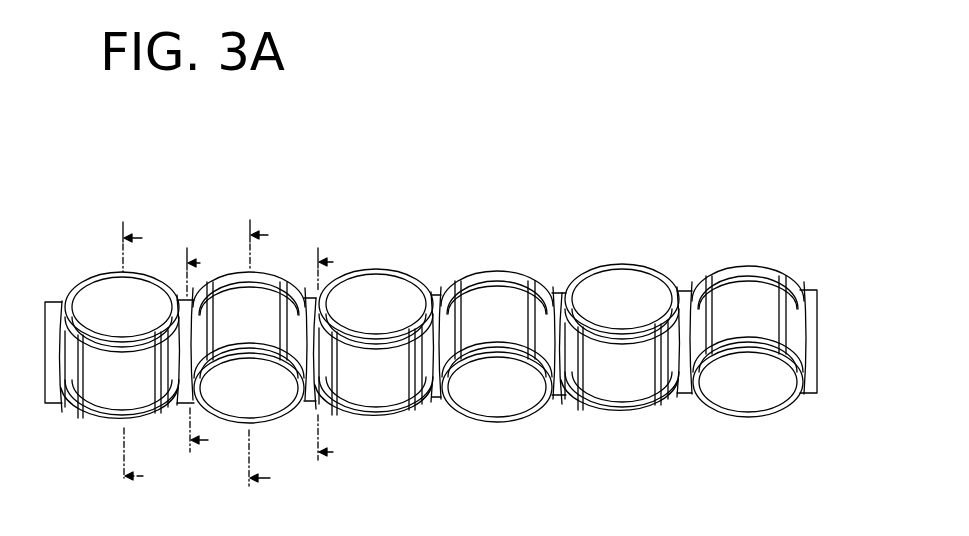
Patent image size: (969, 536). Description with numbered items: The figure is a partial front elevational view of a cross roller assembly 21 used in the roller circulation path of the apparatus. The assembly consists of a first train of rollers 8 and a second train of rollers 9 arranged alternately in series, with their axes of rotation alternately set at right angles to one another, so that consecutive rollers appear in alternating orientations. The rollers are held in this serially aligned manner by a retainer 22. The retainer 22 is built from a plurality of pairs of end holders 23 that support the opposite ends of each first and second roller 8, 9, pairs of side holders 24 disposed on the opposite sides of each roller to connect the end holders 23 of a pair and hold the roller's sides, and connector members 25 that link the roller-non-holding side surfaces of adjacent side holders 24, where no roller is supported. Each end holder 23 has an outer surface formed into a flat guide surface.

The cross roller assembly 21 is at (565, 224).
The retainer 22 is at (439, 286).
The end holder 23 is at (374, 270).
The side holder 24 is at (300, 282).
The connector member 25 is at (186, 300).
The first roller 8 is at (253, 273).
The second roller 9 is at (119, 411).